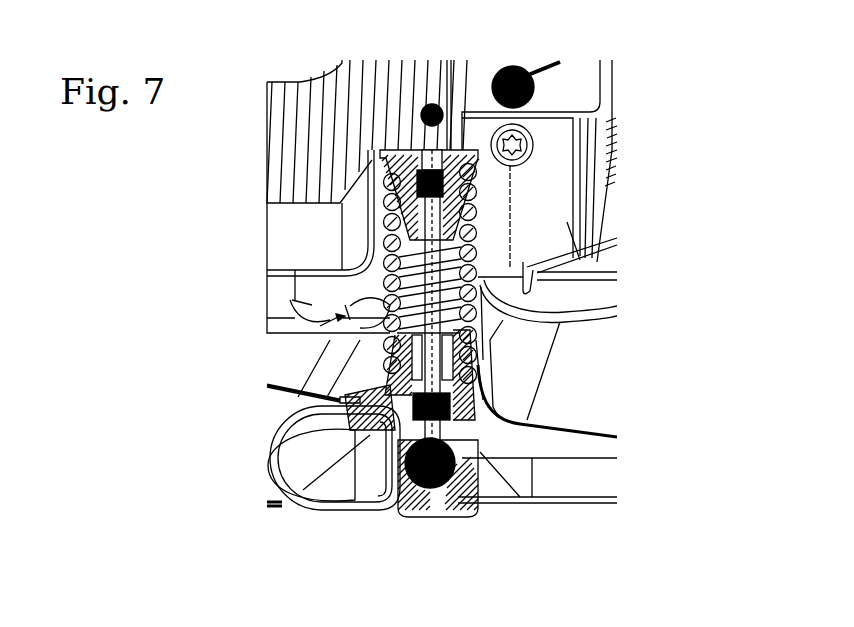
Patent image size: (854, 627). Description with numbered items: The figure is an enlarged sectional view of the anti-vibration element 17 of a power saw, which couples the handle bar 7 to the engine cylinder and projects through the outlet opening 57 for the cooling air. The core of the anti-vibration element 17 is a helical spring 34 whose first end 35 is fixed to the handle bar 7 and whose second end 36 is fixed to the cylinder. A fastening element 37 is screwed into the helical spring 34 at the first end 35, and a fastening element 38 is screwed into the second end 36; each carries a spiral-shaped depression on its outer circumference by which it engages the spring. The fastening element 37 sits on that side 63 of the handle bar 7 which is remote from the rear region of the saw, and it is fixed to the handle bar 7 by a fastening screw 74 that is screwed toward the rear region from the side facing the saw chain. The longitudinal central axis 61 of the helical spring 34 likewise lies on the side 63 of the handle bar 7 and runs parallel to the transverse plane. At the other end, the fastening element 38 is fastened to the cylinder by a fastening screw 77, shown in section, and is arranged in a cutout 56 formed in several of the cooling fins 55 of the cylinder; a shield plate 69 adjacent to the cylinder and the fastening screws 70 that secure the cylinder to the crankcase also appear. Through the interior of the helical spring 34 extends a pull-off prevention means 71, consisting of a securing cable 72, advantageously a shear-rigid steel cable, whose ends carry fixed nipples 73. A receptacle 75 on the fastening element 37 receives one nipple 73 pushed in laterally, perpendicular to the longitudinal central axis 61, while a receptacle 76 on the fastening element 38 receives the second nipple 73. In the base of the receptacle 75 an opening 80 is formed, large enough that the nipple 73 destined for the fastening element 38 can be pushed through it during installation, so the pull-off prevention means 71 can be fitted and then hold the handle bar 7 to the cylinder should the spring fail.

The handle bar 7 is at (347, 510).
The anti-vibration element 17 is at (366, 279).
The helical spring 34 is at (567, 280).
The first end 35 is at (523, 422).
The second end 36 is at (473, 177).
The fastening element 37 is at (487, 460).
The fastening element 38 is at (372, 163).
The cooling fins 55 is at (566, 78).
The cutout 56 is at (415, 160).
The outlet opening 57 is at (300, 338).
The longitudinal central axis 61 is at (428, 527).
The side 63 is at (407, 517).
The shield plate 69 is at (585, 192).
The fastening screws 70 is at (527, 148).
The pull-off prevention means 71 is at (493, 372).
The securing cable 72 is at (557, 320).
The nipple 73 is at (570, 252).
The fastening screw 74 is at (443, 480).
The receptacle 75 is at (282, 507).
The receptacle 76 is at (449, 110).
The fastening screw 77 is at (432, 104).
The opening 80 is at (363, 407).